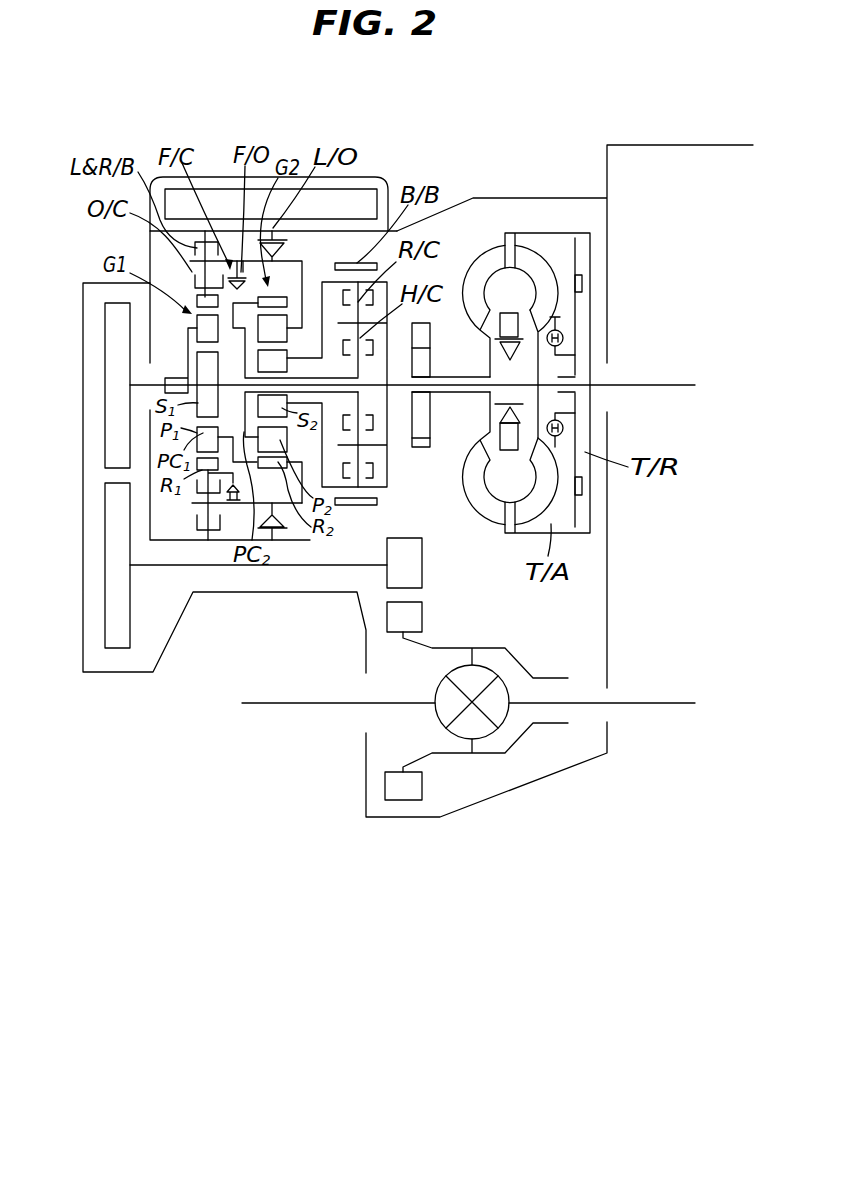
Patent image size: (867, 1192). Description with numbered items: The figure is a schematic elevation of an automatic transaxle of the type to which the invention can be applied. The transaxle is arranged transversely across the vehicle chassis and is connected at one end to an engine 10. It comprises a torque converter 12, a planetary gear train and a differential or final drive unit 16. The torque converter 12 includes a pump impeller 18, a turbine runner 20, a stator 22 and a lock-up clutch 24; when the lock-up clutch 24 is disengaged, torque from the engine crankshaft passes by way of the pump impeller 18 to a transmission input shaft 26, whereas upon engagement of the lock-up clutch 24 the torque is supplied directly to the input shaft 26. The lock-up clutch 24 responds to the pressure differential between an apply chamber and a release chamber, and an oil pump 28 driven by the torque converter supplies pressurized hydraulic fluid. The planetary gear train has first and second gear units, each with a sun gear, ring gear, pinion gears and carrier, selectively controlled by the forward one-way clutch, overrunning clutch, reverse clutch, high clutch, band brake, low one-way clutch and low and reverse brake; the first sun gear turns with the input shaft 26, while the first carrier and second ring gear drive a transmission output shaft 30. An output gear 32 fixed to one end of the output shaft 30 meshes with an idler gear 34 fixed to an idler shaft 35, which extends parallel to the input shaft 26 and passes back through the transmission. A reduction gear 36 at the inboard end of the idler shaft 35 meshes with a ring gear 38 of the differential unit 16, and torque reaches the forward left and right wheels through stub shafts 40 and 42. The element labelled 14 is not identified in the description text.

The engine 10 is at (642, 145).
The torque converter 12 is at (524, 219).
The control valve assembly 14 is at (232, 243).
The differential or final drive unit 16 is at (488, 660).
The pump impeller 18 is at (488, 262).
The turbine runner 20 is at (530, 262).
The stator 22 is at (508, 327).
The lock-up clutch 24 is at (576, 308).
The transmission input shaft 26 is at (448, 377).
The oil pump 28 is at (415, 447).
The transmission output shaft 30 is at (156, 380).
The output gear 32 is at (105, 405).
The idler gear 34 is at (105, 572).
The idler shaft 35 is at (355, 563).
The reduction gear 36 is at (422, 552).
The ring gear 38 is at (405, 790).
The stub shaft 40 is at (330, 705).
The stub shaft 42 is at (660, 705).